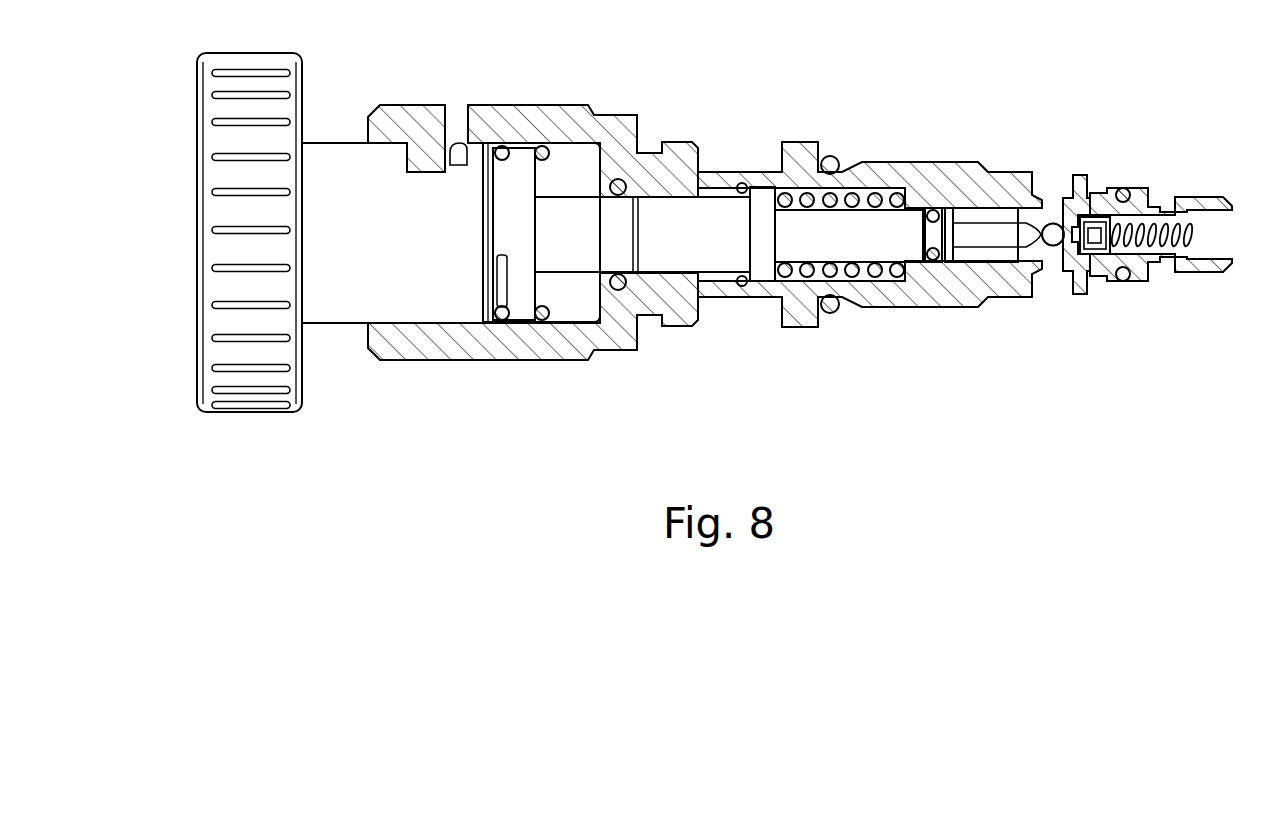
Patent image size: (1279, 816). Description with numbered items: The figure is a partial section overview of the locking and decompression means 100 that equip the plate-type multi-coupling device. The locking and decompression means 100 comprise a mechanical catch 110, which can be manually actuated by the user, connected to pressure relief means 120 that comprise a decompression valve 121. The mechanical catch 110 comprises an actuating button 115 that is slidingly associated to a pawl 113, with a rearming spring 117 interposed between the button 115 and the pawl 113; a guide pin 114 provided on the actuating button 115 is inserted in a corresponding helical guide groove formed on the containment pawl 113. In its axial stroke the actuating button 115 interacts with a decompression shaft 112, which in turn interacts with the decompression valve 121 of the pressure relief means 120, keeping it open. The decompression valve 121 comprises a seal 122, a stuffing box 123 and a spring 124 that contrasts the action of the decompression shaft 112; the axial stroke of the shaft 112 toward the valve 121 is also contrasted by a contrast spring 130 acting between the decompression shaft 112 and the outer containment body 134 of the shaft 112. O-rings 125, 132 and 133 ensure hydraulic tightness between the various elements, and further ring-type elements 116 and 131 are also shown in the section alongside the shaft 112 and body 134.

The locking and decompression means 100 is at (170, 117).
The mechanical catch 110 is at (233, 248).
The decompression shaft 112 is at (670, 275).
The pawl 113 is at (594, 110).
The guide pin 114 is at (455, 103).
The actuating button 115 is at (315, 130).
The seal ring 116 is at (617, 298).
The rearming spring 117 is at (543, 323).
The pressure relief means 120 is at (1190, 226).
The decompression valve 121 is at (1053, 221).
The seal 122 is at (1078, 242).
The stuffing box 123 is at (1112, 252).
The spring 124 is at (1185, 252).
The o-ring 125 is at (1142, 190).
The contrast spring 130 is at (854, 268).
The piston 131 is at (738, 175).
The o-ring 132 is at (935, 265).
The o-ring 133 is at (830, 150).
The outer containment body 134 is at (918, 155).